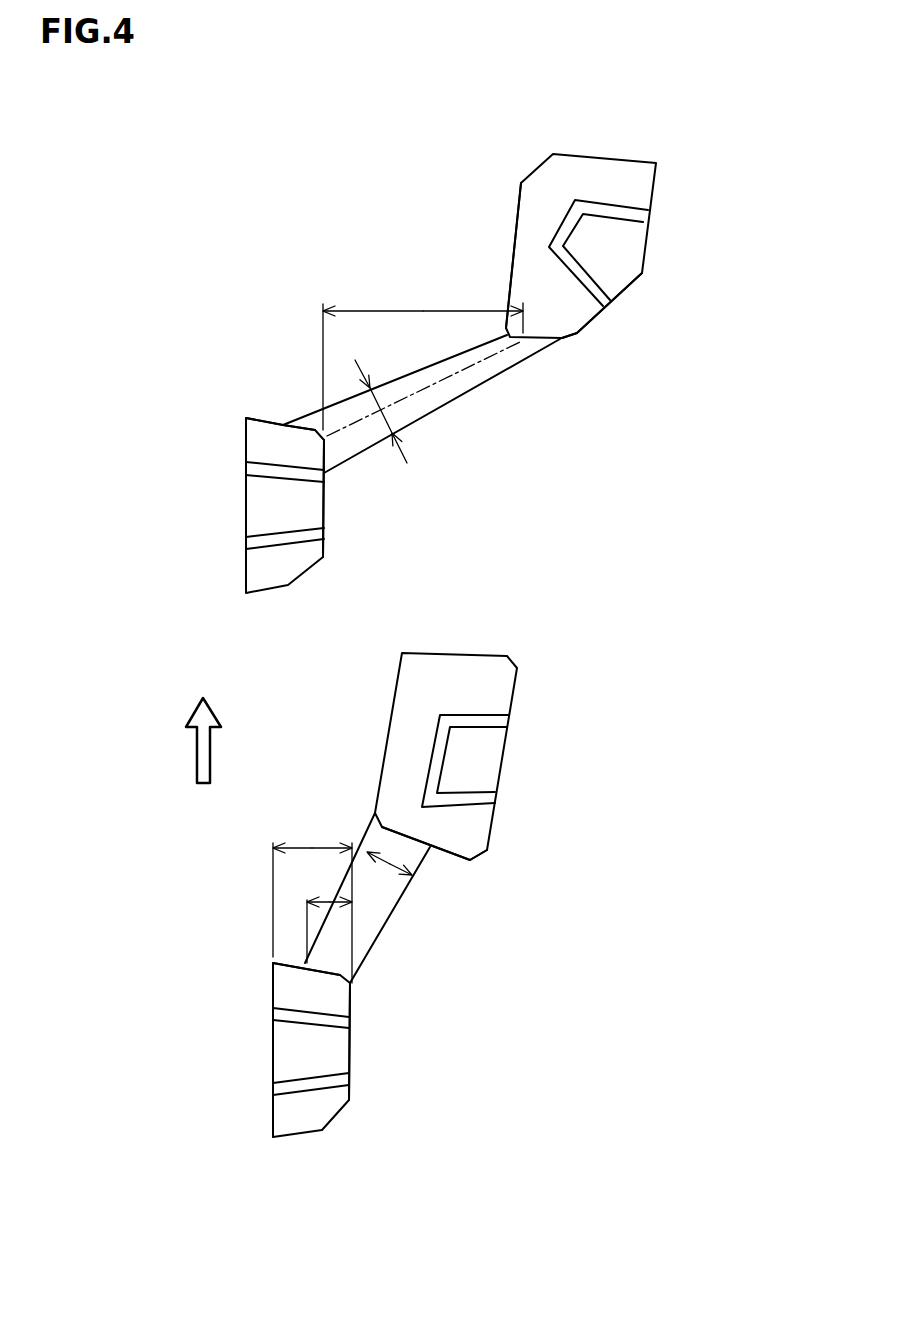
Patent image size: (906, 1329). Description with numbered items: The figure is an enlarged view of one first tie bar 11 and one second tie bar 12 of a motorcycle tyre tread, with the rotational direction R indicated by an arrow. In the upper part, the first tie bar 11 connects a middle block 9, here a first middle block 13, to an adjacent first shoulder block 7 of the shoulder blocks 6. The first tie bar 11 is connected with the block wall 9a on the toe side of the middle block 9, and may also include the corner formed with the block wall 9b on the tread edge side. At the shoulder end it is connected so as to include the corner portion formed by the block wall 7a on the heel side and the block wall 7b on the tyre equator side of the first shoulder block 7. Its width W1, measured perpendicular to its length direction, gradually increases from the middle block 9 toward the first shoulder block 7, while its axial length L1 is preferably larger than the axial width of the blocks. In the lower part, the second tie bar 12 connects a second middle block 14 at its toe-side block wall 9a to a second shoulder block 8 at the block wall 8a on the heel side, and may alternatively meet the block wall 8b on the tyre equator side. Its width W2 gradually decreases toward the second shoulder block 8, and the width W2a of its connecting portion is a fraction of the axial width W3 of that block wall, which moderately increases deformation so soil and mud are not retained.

The middle block 9 is at (578, 538).
The first middle block 13 is at (605, 247).
The second middle block 14 is at (475, 758).
The block wall on the toe side 9a is at (562, 340).
The block wall on the tread edge side 9b is at (515, 228).
The shoulder block 6 is at (293, 757).
The first shoulder block 7 is at (283, 505).
The block wall on the heel side 7a is at (262, 420).
The block wall on the tyre equator side 7b is at (323, 507).
The second shoulder block 8 is at (305, 1050).
The block wall on the heel side 8a is at (292, 963).
The block wall on the tyre equator side 8b is at (349, 1052).
The first tie bar 11 is at (478, 368).
The second tie bar 12 is at (368, 915).
The length of the first tie bar L1 is at (423, 355).
The width of the first tie bar W1 is at (385, 418).
The width of the second tie bar W2 is at (387, 865).
The width of the connecting portion W2a is at (318, 915).
The width of the block wall W3 is at (312, 900).
The rotational direction R is at (203, 726).